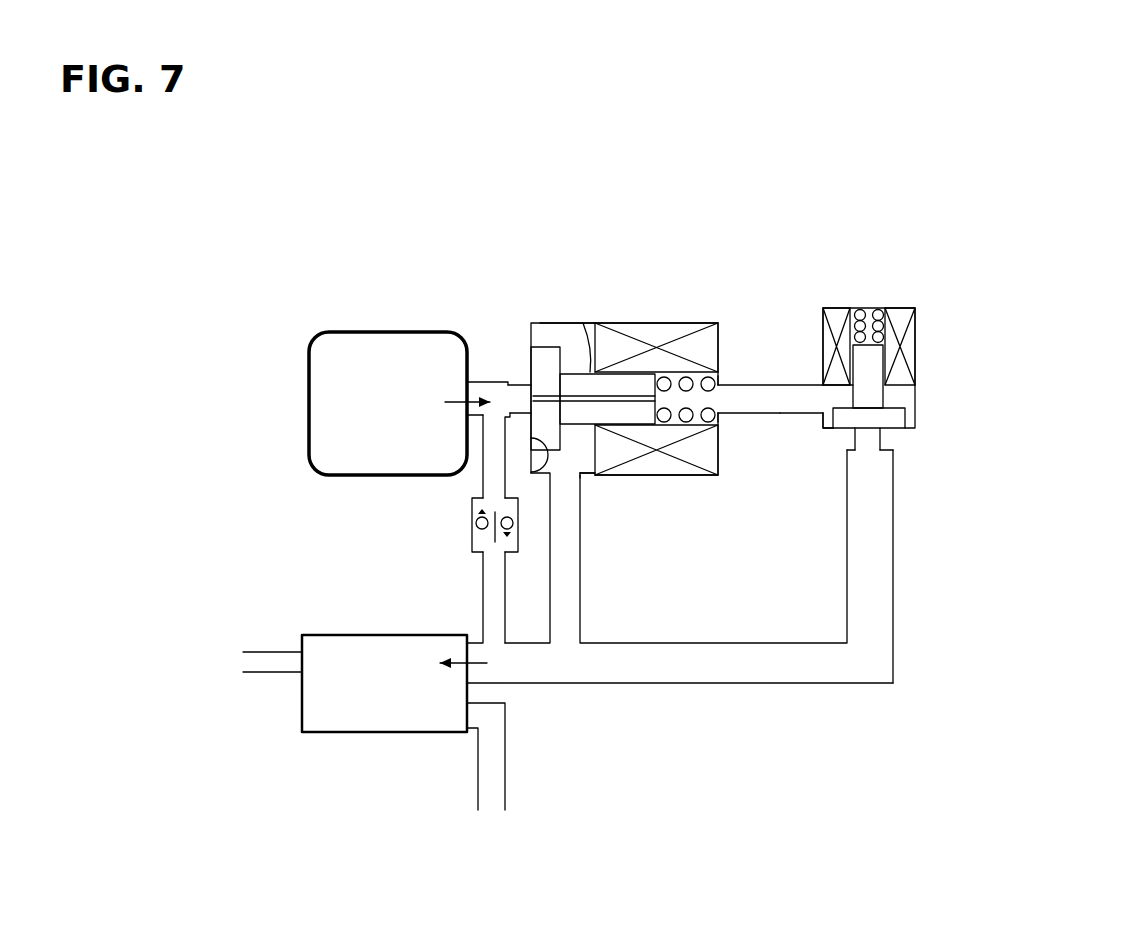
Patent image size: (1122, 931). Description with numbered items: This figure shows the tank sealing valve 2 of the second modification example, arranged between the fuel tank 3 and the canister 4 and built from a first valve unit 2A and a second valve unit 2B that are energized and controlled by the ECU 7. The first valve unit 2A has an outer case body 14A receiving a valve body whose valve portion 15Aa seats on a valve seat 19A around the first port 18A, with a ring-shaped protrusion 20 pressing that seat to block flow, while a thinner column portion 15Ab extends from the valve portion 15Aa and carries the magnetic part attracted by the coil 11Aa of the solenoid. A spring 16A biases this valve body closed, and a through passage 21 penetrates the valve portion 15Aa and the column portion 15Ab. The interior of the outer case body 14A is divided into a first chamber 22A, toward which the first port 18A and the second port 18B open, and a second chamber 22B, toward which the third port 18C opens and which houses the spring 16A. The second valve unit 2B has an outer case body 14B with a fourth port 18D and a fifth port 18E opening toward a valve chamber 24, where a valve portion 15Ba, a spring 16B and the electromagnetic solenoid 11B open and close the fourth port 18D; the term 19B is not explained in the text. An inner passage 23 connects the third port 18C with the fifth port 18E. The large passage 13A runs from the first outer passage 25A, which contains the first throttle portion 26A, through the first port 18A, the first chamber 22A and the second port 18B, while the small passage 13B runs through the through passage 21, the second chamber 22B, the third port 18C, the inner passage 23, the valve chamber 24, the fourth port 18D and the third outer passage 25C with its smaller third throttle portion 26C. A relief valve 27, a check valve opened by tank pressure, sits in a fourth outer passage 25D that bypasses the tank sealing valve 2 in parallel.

The tank sealing valve 2 is at (738, 360).
The first valve unit 2A is at (602, 380).
The second valve unit 2B is at (951, 393).
The fuel tank 3 is at (320, 400).
The canister 4 is at (320, 712).
The ECU 7 is at (591, 428).
The coil 11Aa is at (673, 332).
The electromagnetic solenoid 11B is at (898, 318).
The large passage 13A is at (389, 398).
The small passage 13B is at (899, 703).
The outer case body 14A is at (617, 387).
The outer case body 14B is at (921, 411).
The valve portion 15Aa is at (521, 387).
The column portion 15Ab is at (616, 346).
The valve portion 15Ba is at (970, 418).
The spring 16A is at (719, 381).
The spring 16B is at (858, 308).
The first port 18A is at (527, 402).
The second port 18B is at (572, 505).
The third port 18C is at (737, 408).
The fourth port 18D is at (884, 444).
The fifth port 18E is at (795, 406).
The valve seat 19A is at (530, 475).
The valve seat 19B is at (828, 400).
The protrusion 20 is at (530, 442).
The through passage 21 is at (632, 400).
The first chamber 22A is at (547, 347).
The second chamber 22B is at (761, 384).
The inner passage 23 is at (760, 407).
The valve chamber 24 is at (906, 400).
The first outer passage 25A is at (470, 412).
The third outer passage 25C is at (570, 608).
The fourth outer passage 25D is at (493, 617).
The first throttle portion 26A is at (487, 362).
The third throttle portion 26C is at (868, 470).
The relief valve 27 is at (526, 549).